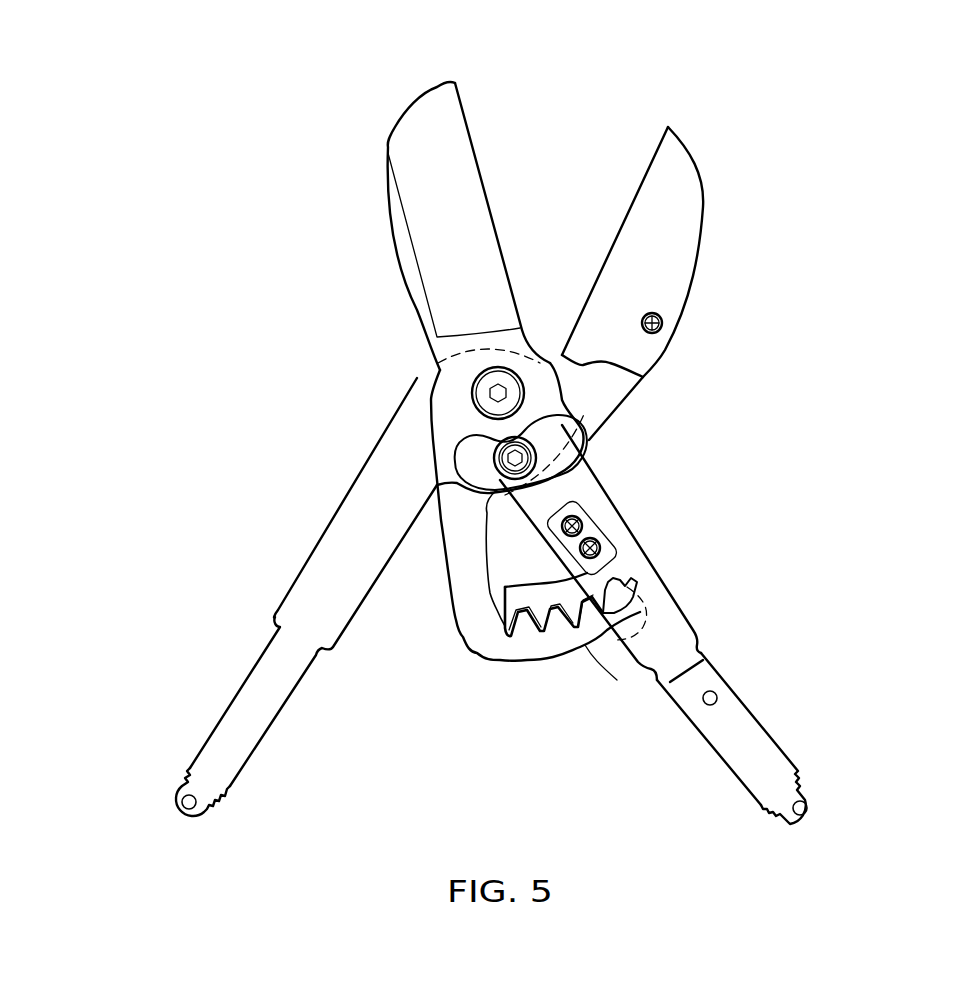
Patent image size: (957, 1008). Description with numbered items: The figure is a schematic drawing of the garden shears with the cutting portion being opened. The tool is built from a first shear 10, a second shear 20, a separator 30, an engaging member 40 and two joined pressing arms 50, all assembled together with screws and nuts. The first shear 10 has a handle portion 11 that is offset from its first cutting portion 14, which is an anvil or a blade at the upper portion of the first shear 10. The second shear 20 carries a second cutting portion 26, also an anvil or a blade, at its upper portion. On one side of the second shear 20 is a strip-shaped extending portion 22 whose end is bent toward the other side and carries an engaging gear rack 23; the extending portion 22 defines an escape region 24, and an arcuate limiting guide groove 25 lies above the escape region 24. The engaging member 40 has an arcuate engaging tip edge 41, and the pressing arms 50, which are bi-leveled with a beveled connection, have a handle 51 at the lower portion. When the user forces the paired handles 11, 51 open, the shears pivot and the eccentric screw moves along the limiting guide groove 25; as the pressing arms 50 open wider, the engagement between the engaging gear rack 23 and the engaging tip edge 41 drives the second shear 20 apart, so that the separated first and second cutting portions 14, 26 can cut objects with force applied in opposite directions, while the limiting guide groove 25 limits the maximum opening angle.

The first shear 10 is at (487, 421).
The handle portion 11 is at (243, 720).
The first cutting portion 14 is at (670, 248).
The second shear 20 is at (426, 194).
The extending portion 22 is at (453, 559).
The engaging gear rack 23 is at (588, 613).
The escape region 24 is at (523, 558).
The limiting guide groove 25 is at (467, 453).
The second cutting portion 26 is at (432, 207).
The separator 30 is at (592, 520).
The engaging member 40 is at (617, 559).
The engaging tip edge 41 is at (537, 600).
The pressing arms 50 is at (721, 617).
The handle 51 is at (753, 740).